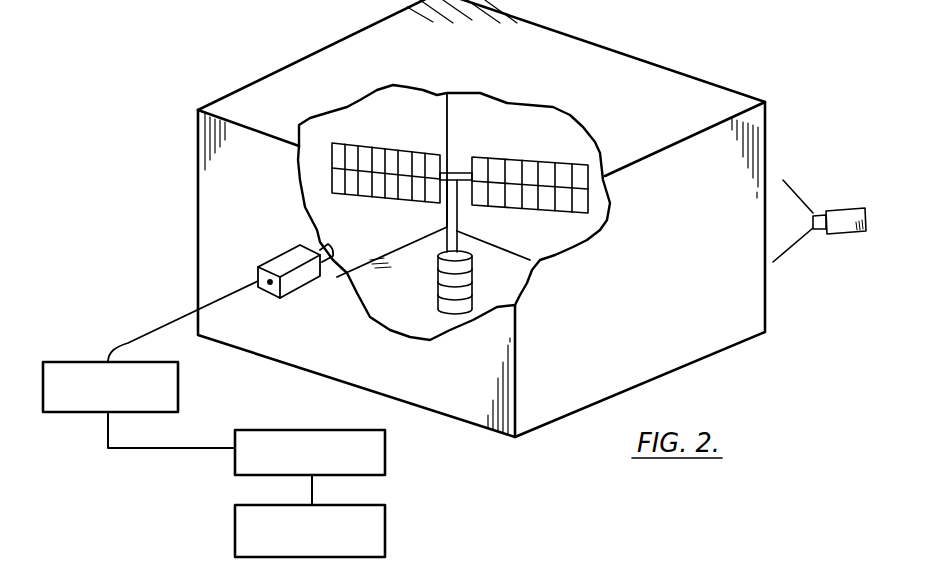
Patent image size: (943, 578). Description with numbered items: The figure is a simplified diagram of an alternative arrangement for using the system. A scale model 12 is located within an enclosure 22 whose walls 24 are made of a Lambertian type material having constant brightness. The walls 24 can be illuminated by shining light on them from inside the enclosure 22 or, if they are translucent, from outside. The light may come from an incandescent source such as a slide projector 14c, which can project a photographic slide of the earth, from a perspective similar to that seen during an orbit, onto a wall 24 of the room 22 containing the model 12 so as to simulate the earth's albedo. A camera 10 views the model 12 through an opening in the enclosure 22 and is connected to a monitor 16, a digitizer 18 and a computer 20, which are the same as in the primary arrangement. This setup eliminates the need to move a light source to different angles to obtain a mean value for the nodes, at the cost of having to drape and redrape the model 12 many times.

The camera 10 is at (153, 228).
The scale model 12 is at (388, 148).
The slide projector 14c is at (837, 232).
The monitor 16 is at (70, 413).
The digitizer 18 is at (387, 461).
The computer 20 is at (387, 540).
The enclosure 22 is at (765, 101).
The walls 24 is at (472, 68).